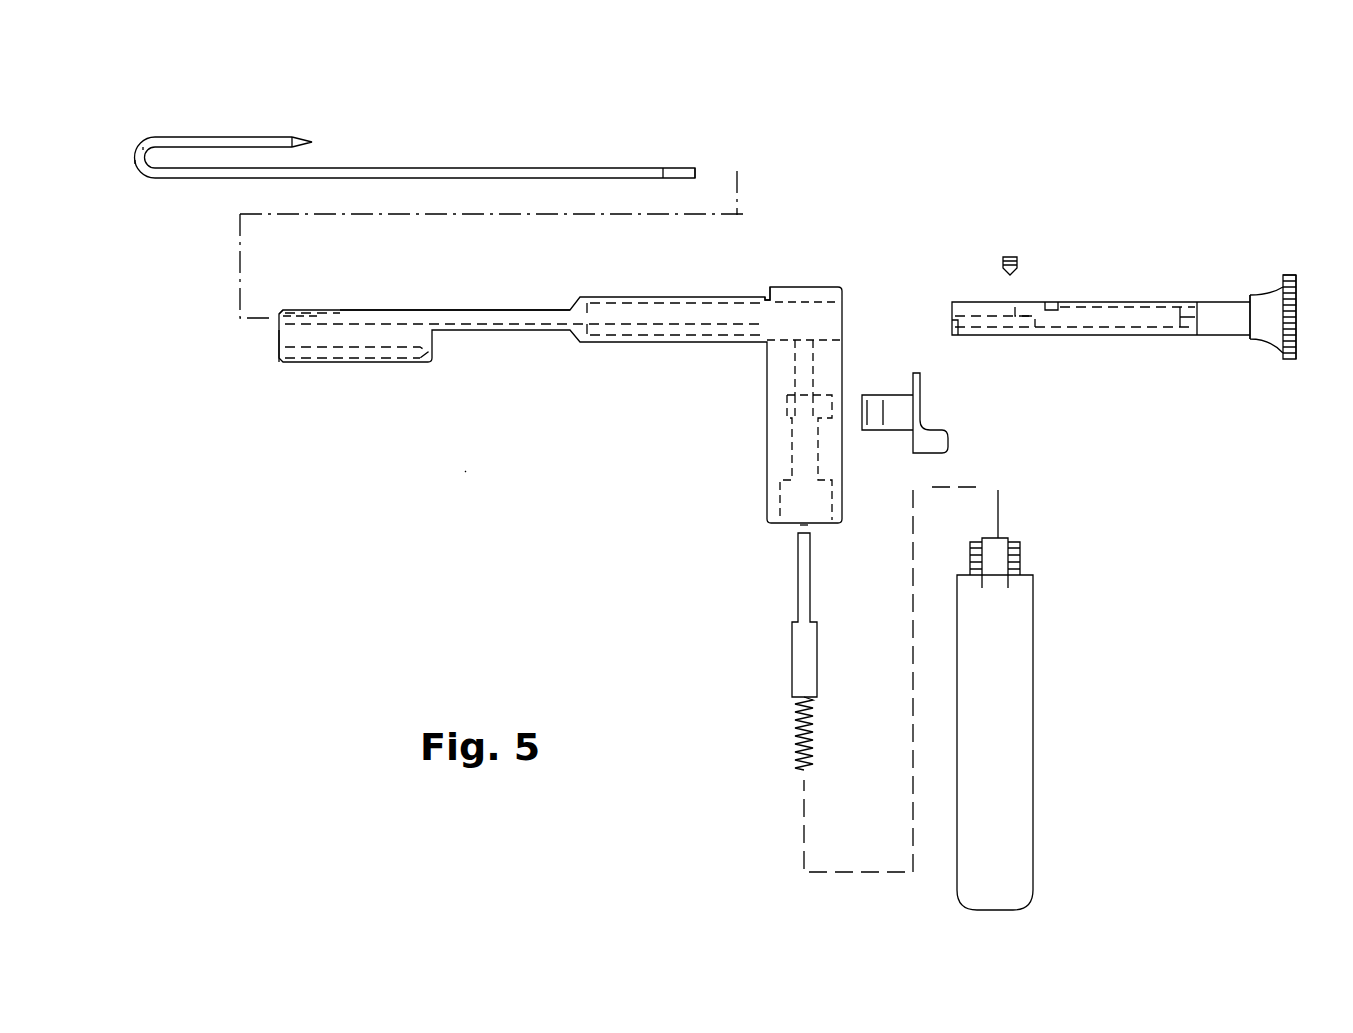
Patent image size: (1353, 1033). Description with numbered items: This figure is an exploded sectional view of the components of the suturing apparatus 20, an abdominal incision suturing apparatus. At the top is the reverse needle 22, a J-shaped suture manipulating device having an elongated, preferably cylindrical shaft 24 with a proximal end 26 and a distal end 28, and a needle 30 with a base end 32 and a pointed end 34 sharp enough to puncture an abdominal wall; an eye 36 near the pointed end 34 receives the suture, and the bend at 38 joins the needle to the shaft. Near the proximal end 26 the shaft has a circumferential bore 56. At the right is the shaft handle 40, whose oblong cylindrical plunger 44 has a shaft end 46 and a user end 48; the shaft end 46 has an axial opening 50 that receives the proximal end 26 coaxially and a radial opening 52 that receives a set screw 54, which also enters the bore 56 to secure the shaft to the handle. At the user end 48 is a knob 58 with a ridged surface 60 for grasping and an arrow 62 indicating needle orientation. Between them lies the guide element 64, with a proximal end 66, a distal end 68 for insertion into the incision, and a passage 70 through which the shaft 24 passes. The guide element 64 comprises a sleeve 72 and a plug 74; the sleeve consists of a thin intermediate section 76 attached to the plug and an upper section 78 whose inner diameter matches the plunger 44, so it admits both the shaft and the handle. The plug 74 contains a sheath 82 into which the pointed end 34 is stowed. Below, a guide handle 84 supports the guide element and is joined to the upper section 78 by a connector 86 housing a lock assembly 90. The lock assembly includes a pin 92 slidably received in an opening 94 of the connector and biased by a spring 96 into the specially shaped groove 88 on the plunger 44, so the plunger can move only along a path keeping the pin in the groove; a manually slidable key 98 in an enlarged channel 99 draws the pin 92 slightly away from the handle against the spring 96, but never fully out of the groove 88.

The suturing apparatus 20 is at (464, 474).
The reverse needle 22 is at (440, 202).
The elongated shaft 24 is at (443, 168).
The proximal end 26 is at (700, 176).
The distal end 28 is at (148, 186).
The needle 30 is at (222, 140).
The base end 32 is at (150, 134).
The pointed end 34 is at (314, 141).
The eye 36 is at (290, 134).
The inner bend surface 38 is at (136, 184).
The shaft handle 40 is at (1117, 353).
The plunger 44 is at (1070, 320).
The shaft end 46 is at (953, 337).
The user end 48 is at (1289, 366).
The axial opening 50 is at (950, 317).
The radial opening 52 is at (1012, 305).
The set screw 54 is at (1022, 266).
The circumferential bore 56 is at (663, 166).
The knob 58 is at (1280, 298).
The ridged surface 60 is at (1290, 271).
The arrow 62 is at (1300, 290).
The guide element 64 is at (572, 374).
The proximal end 66 is at (765, 298).
The distal end 68 is at (295, 308).
The passage 70 is at (328, 316).
The sleeve 72 is at (510, 309).
The plug 74 is at (428, 345).
The intermediate section 76 is at (520, 335).
The upper section 78 is at (660, 345).
The sheath 82 is at (282, 358).
The guide handle 84 is at (1008, 712).
The connector 86 is at (778, 372).
The groove 88 is at (1130, 300).
The lock assembly 90 is at (848, 548).
The pin 92 is at (800, 583).
The opening 94 is at (803, 388).
The spring 96 is at (795, 728).
The key 98 is at (938, 440).
The enlarged channel 99 is at (824, 416).